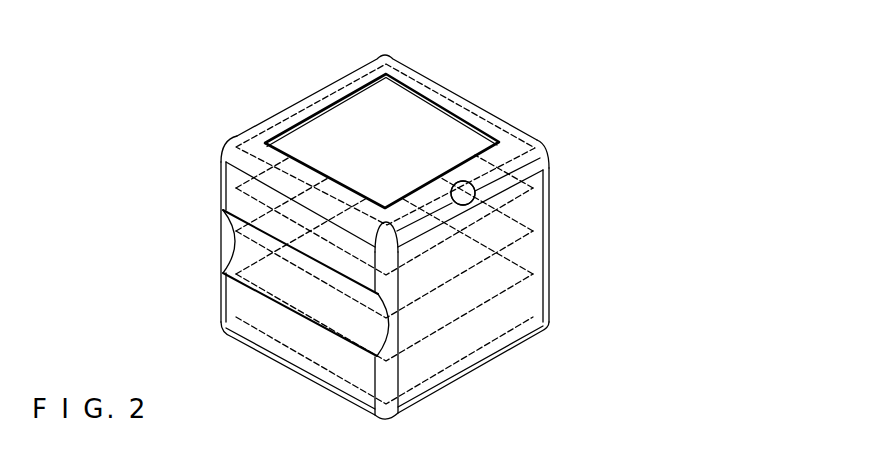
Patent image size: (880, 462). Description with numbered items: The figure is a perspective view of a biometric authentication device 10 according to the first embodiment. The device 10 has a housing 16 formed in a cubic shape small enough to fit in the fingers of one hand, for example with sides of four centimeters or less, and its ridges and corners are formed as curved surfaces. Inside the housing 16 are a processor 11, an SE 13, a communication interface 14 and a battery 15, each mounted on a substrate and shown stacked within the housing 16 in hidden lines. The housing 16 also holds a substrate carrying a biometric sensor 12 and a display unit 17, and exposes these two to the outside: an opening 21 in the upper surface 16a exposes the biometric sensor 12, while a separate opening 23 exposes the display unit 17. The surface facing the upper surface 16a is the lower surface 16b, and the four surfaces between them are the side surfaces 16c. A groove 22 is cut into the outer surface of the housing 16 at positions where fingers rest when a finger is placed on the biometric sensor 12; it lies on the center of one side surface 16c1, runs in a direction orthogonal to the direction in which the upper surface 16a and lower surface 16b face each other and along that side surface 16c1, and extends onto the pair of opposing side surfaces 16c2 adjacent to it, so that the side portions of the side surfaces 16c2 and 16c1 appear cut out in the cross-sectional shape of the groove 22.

The biometric authentication device 10 is at (236, 394).
The processor 11 is at (555, 167).
The biometric sensor 12 is at (461, 130).
The SE (secure element) 13 is at (553, 228).
The communication interface 14 is at (553, 270).
The battery 15 is at (553, 318).
The housing 16 is at (549, 197).
The upper surface 16a is at (393, 56).
The lower surface 16b is at (233, 340).
The side surfaces 16c is at (549, 294).
The side surface 16c1 is at (350, 380).
The side surfaces 16c2 is at (221, 187).
The display unit 17 is at (473, 186).
The opening 21 is at (433, 98).
The groove 22 is at (237, 243).
The opening 23 is at (465, 181).